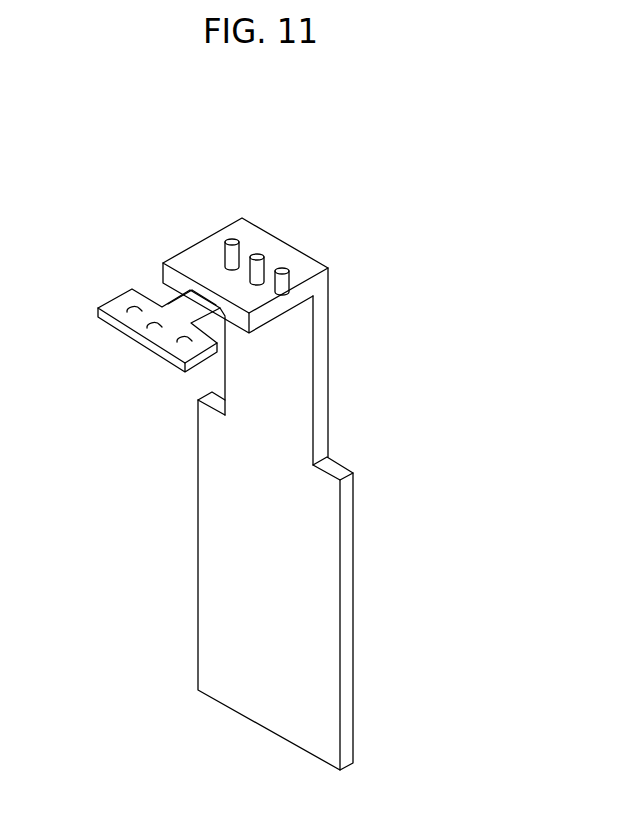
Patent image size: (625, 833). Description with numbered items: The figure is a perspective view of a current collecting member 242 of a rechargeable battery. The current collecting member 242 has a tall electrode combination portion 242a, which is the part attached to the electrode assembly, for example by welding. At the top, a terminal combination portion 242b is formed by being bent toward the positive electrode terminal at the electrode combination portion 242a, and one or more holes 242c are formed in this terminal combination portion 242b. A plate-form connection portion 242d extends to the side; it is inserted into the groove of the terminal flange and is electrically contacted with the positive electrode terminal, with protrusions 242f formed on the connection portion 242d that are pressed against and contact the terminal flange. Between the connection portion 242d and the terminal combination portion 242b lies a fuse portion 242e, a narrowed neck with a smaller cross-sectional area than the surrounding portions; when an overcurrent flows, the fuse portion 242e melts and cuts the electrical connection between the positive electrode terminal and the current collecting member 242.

The current collecting member 242 is at (362, 310).
The electrode combination portion 242a is at (347, 567).
The terminal combination portion 242b is at (200, 258).
The holes 242c is at (258, 256).
The connection portion 242d is at (113, 305).
The fuse portion 242e is at (166, 306).
The protrusion 242f is at (147, 321).